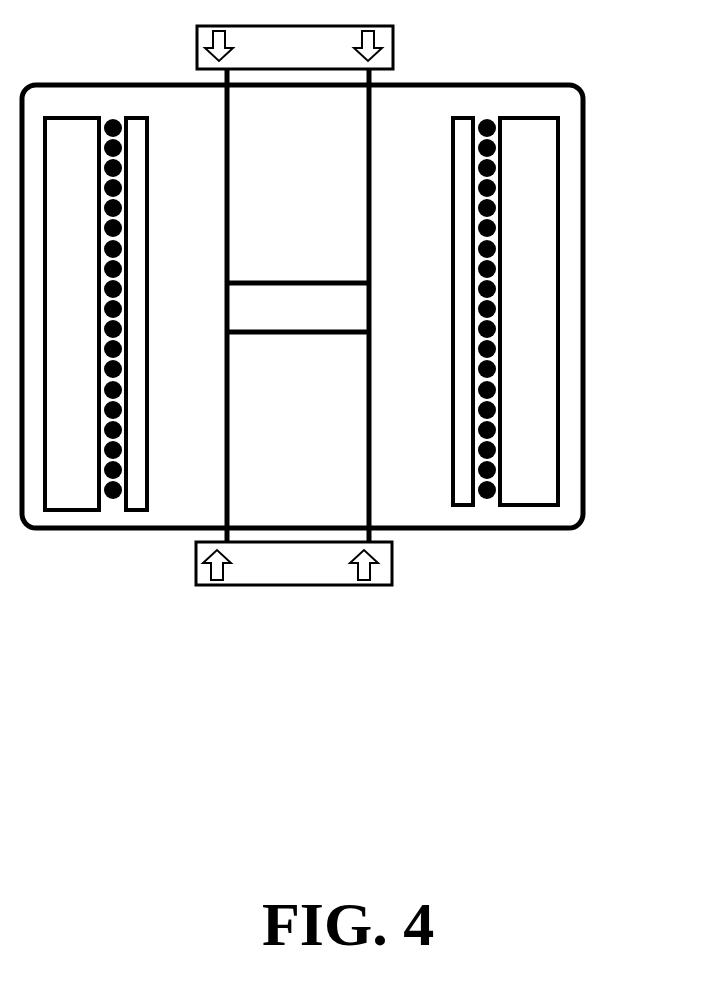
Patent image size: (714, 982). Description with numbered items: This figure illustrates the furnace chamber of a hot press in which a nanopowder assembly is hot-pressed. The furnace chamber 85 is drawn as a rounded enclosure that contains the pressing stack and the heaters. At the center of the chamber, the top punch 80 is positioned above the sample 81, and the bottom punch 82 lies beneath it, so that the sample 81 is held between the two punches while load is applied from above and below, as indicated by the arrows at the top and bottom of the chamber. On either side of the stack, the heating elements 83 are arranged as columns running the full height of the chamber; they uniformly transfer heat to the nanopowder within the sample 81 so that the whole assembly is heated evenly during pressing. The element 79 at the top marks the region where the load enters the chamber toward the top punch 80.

The gas inlet 79 is at (393, 43).
The top punch 80 is at (340, 171).
The sample 81 is at (337, 309).
The bottom punch 82 is at (340, 393).
The heating elements 83 is at (495, 492).
The furnace chamber 85 is at (583, 437).